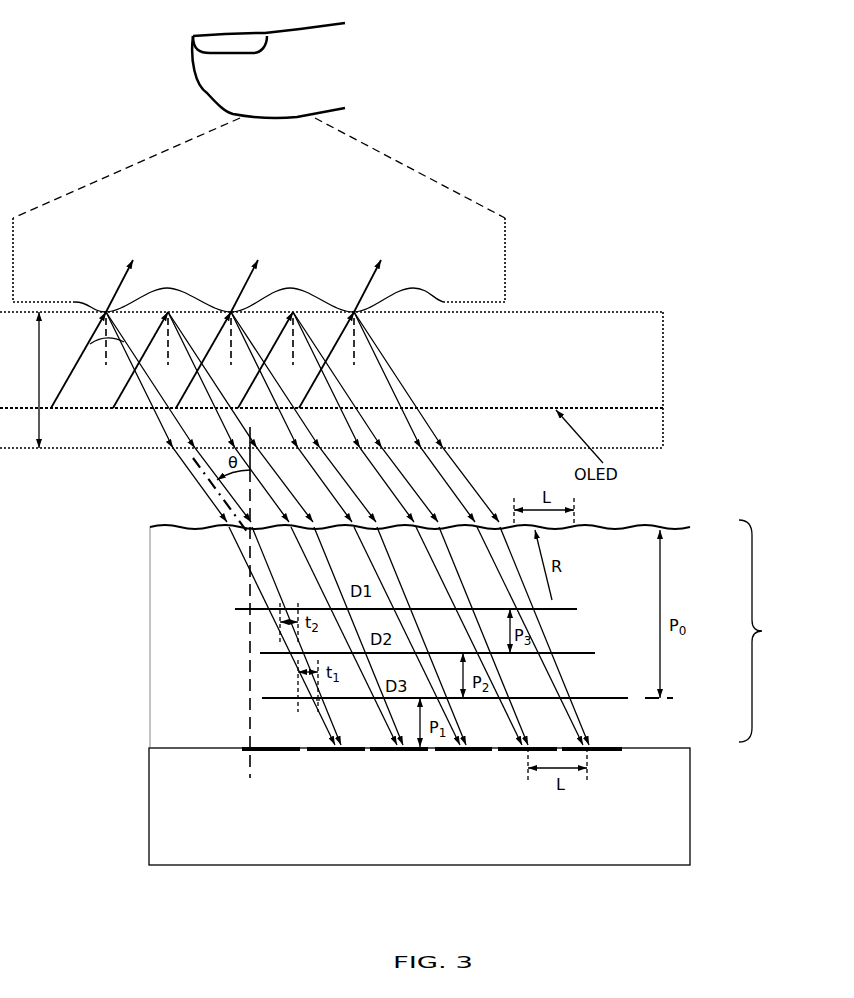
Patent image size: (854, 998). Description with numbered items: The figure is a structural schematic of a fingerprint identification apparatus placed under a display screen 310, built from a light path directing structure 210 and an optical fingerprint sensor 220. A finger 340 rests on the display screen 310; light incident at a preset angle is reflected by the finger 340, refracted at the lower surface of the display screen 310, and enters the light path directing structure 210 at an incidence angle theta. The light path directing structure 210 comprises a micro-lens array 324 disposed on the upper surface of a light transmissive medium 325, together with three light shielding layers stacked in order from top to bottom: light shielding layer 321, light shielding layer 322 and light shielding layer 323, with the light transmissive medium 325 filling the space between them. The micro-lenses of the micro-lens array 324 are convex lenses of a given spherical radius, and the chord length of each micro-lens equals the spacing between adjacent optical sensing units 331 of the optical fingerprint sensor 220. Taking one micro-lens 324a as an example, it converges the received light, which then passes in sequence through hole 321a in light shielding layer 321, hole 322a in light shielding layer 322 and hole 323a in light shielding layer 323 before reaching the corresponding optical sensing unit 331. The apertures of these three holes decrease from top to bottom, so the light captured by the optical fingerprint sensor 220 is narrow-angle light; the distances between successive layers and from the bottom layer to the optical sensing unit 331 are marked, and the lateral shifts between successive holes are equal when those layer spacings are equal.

The finger 340 is at (273, 70).
The display screen 310 is at (583, 332).
The light path directing structure 210 is at (772, 631).
The optical fingerprint sensor 220 is at (342, 837).
The micro-lens array 324 is at (578, 525).
The micro-lens 324a is at (226, 533).
The light transmissive medium 325 is at (158, 617).
The light shielding layer 321 is at (422, 601).
The light shielding layer 322 is at (444, 645).
The light shielding layer 323 is at (467, 688).
The hole 321a is at (268, 615).
The hole 322a is at (288, 662).
The hole 323a is at (310, 705).
The optical sensing unit 331 is at (320, 752).